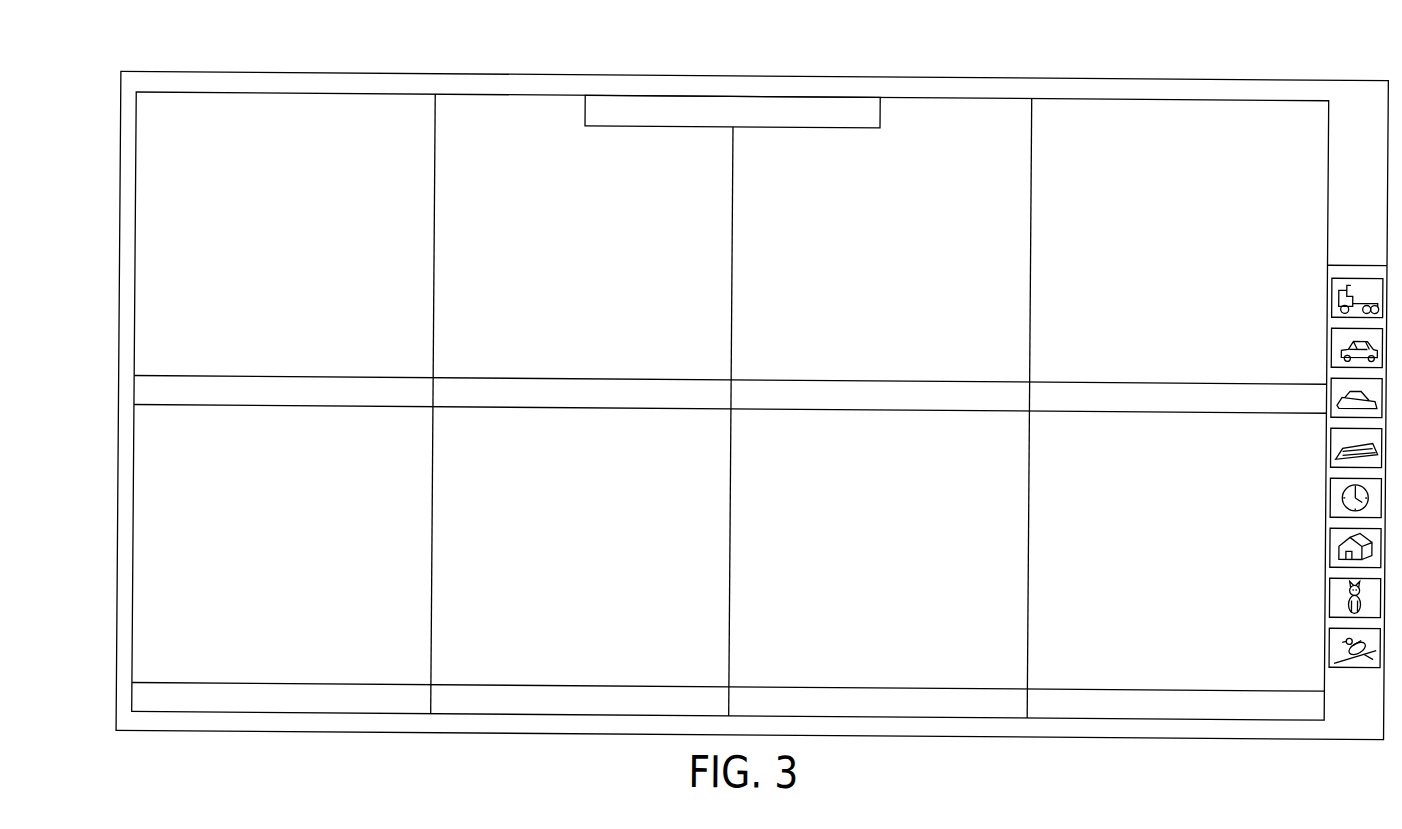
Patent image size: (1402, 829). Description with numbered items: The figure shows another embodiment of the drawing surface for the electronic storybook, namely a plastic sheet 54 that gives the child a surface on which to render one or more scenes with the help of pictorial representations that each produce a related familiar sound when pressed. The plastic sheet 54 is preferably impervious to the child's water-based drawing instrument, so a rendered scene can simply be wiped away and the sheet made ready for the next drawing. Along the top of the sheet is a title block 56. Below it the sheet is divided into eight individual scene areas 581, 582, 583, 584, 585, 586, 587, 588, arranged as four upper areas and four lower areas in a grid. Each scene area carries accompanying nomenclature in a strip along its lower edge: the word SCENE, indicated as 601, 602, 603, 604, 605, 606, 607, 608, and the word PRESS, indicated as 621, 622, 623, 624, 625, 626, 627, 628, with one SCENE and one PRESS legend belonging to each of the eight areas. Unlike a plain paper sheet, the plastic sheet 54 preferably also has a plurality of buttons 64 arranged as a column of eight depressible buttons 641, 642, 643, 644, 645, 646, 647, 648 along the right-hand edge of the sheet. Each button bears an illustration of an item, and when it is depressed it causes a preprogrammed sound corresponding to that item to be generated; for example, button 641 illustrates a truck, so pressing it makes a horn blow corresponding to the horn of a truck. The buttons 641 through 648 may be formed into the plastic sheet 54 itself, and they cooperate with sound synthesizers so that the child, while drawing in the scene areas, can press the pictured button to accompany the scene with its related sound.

The plastic sheet 54 is at (962, 58).
The title block 56 is at (616, 129).
The first scene area 581 is at (281, 126).
The second scene area 582 is at (511, 116).
The third scene area 583 is at (825, 144).
The fourth scene area 584 is at (1170, 120).
The fifth scene area 585 is at (150, 446).
The sixth scene area 586 is at (536, 438).
The seventh scene area 587 is at (836, 444).
The eighth scene area 588 is at (1130, 428).
The SCENE nomenclature 601 is at (174, 381).
The SCENE nomenclature 602 is at (477, 382).
The SCENE nomenclature 603 is at (773, 385).
The SCENE nomenclature 604 is at (1060, 381).
The SCENE nomenclature 605 is at (179, 686).
The SCENE nomenclature 606 is at (480, 687).
The SCENE nomenclature 607 is at (782, 688).
The SCENE nomenclature 608 is at (1074, 688).
The PRESS nomenclature 621 is at (270, 382).
The PRESS nomenclature 622 is at (595, 381).
The PRESS nomenclature 623 is at (895, 384).
The PRESS nomenclature 624 is at (1185, 385).
The PRESS nomenclature 625 is at (274, 686).
The PRESS nomenclature 626 is at (577, 686).
The PRESS nomenclature 627 is at (877, 687).
The PRESS nomenclature 628 is at (1170, 687).
The buttons 64 is at (1219, 269).
The button 641 is at (1331, 296).
The button 642 is at (1331, 343).
The button 643 is at (1332, 401).
The button 644 is at (1332, 446).
The button 645 is at (1332, 488).
The button 646 is at (1336, 541).
The button 647 is at (1336, 591).
The button 648 is at (1337, 641).